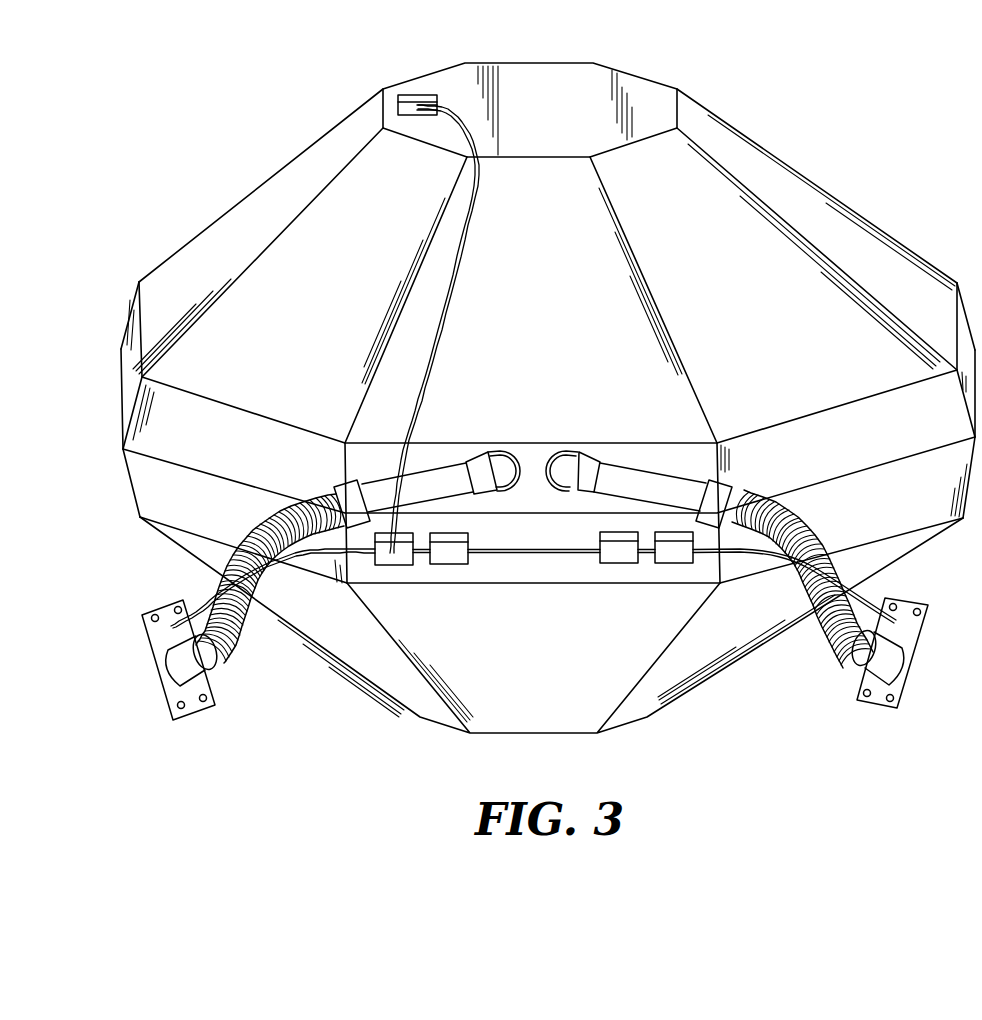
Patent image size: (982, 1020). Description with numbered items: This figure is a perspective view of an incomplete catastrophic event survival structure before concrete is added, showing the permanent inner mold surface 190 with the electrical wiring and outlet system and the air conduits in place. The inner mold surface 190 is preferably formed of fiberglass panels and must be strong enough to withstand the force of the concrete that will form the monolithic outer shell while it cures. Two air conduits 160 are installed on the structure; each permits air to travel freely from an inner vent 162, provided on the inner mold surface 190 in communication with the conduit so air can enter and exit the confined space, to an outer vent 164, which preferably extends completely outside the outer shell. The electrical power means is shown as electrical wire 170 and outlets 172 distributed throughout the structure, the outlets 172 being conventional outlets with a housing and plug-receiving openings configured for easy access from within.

The air conduit 160 is at (292, 518).
The inner vent 162 is at (551, 452).
The outer vent 164 is at (181, 657).
The electrical wire 170 is at (449, 286).
The outlet 172 is at (408, 96).
The permanent inner mold surface 190 is at (876, 202).